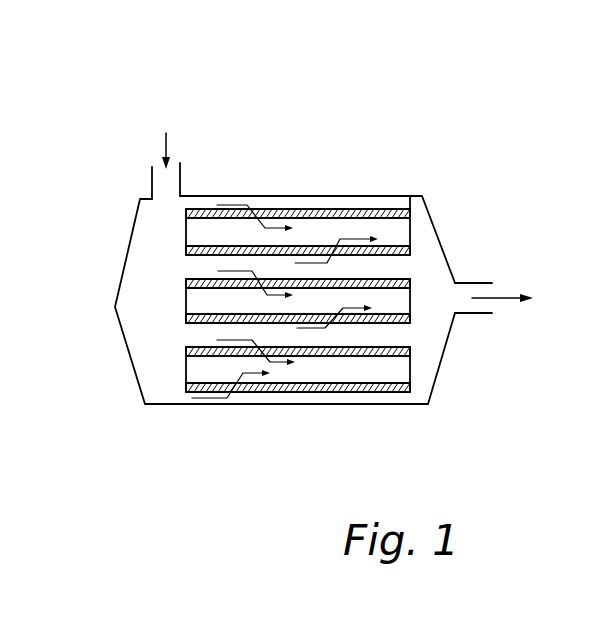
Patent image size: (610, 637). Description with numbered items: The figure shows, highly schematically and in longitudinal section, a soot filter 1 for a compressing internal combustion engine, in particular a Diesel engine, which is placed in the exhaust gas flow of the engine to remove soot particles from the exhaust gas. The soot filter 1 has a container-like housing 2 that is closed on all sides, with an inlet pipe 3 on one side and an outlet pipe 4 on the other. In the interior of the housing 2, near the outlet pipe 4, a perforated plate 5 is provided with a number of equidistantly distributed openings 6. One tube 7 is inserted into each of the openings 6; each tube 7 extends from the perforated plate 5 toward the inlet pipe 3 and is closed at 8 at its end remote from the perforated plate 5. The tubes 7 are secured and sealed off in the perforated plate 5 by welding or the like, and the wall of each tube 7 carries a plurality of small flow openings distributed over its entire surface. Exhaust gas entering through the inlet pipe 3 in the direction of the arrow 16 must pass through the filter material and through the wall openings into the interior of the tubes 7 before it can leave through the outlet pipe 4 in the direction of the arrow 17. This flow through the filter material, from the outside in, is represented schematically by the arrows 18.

The soot filter 1 is at (367, 146).
The housing 2 is at (422, 195).
The inlet pipe 3 is at (180, 178).
The outlet pipe 4 is at (475, 283).
The perforated plate 5 is at (410, 265).
The openings 6 is at (423, 368).
The tube 7 is at (395, 358).
The closed end 8 is at (186, 377).
The arrow 16 is at (166, 137).
The arrow 17 is at (503, 294).
The arrows 18 is at (225, 405).